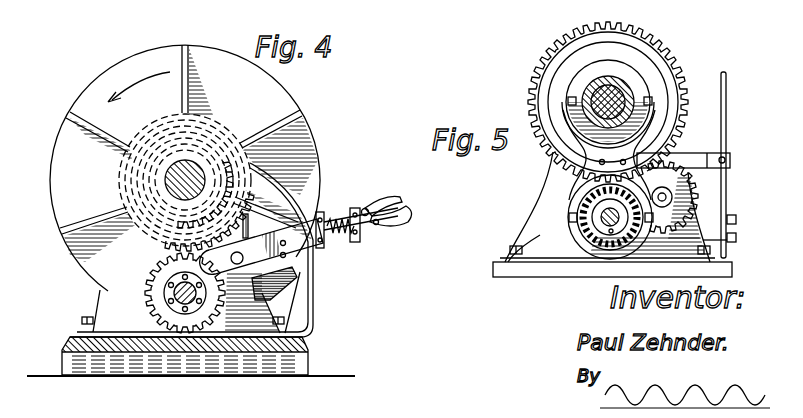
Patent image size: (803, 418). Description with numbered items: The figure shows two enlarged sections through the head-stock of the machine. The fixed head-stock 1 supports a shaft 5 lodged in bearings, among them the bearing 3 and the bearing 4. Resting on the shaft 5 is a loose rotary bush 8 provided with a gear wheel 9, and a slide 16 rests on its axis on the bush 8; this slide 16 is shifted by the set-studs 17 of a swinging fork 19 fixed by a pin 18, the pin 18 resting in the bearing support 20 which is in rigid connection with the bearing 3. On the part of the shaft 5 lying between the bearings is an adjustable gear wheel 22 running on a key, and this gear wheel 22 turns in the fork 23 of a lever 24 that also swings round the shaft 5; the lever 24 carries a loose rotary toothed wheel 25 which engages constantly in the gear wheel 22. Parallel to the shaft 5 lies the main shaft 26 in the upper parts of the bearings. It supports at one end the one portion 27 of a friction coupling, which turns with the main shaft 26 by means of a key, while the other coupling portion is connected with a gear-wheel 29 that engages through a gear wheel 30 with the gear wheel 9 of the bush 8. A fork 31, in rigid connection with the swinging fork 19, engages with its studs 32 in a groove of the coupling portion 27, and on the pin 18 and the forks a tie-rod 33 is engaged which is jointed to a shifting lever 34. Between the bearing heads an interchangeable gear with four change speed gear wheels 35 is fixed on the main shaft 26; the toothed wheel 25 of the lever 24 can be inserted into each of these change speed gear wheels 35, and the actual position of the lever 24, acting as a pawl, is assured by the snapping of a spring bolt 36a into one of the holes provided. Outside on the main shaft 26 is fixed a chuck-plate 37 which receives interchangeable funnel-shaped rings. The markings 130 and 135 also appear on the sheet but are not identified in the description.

In FIG. 4, the head-stock 1 is at (308, 362).
In FIG. 5, the head-stock 1 is at (492, 272).
In FIG. 5, the bearing 3 is at (540, 233).
In FIG. 4, the bearing 4 is at (122, 275).
In FIG. 4, the shaft 5 is at (185, 308).
In FIG. 5, the shaft 5 is at (570, 220).
In FIG. 5, the rotary bush 8 is at (583, 234).
In FIG. 5, the gear wheel 9 is at (598, 244).
In FIG. 5, the slide 16 is at (578, 230).
In FIG. 5, the set-studs 17 is at (520, 228).
In FIG. 5, the pin 18 is at (583, 157).
In FIG. 5, the swinging fork 19 is at (568, 200).
In FIG. 5, the bearing support 20 is at (693, 150).
In FIG. 4, the adjustable gear wheel 22 is at (153, 308).
In FIG. 4, the fork 23 is at (167, 307).
In FIG. 4, the lever 24 is at (292, 266).
In FIG. 4, the toothed wheel 25 is at (268, 290).
In FIG. 4, the main shaft 26 is at (170, 178).
In FIG. 5, the main shaft 26 is at (585, 90).
In FIG. 5, the portion of friction coupling 27 is at (609, 70).
In FIG. 5, the gear-wheel 29 is at (663, 40).
In FIG. 5, the gear wheel 30 is at (675, 191).
In FIG. 5, the fork 31 is at (567, 110).
In FIG. 5, the studs 32 is at (577, 98).
In FIG. 5, the tie-rod 33 is at (738, 221).
In FIG. 5, the shifting lever 34 is at (727, 95).
In FIG. 4, the change speed gear wheels 35 is at (205, 208).
In FIG. 4, the spring bolt 36a is at (364, 207).
In FIG. 4, the chuck-plate 37 is at (62, 218).
In FIG. 5, the terminal 130 is at (471, 6).
In FIG. 5, the terminal 135 is at (713, 6).